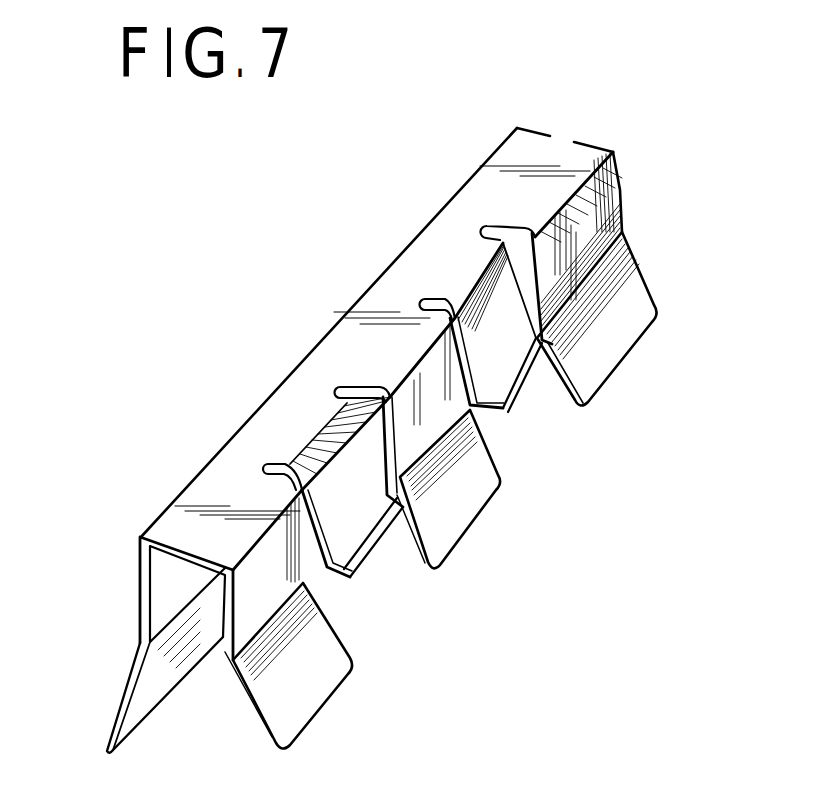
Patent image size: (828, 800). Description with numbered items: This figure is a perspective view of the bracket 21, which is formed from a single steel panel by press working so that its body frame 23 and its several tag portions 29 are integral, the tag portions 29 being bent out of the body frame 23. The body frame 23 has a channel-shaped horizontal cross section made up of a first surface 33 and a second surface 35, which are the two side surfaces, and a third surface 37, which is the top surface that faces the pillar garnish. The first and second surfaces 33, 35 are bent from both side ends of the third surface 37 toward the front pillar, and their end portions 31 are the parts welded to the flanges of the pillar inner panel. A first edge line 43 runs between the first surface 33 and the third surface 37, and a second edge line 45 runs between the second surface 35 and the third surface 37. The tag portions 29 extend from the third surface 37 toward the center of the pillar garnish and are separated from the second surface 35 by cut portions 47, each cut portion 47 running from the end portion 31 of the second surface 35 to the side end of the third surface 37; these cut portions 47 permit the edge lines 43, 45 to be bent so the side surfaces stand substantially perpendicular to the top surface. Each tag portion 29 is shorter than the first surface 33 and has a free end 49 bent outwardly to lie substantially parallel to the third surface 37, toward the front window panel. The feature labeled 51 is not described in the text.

The bracket 21 is at (151, 511).
The body frame 23 is at (186, 481).
The tag portion 29 is at (553, 322).
The end portion 31 is at (125, 692).
The first surface 33 is at (138, 567).
The second surface 35 is at (593, 225).
The third surface 37 is at (275, 405).
The first edge line 43 is at (420, 298).
The second edge line 45 is at (382, 467).
The cut portion 47 is at (263, 467).
The free end 49 is at (520, 382).
The triangular end tab 51 is at (138, 638).